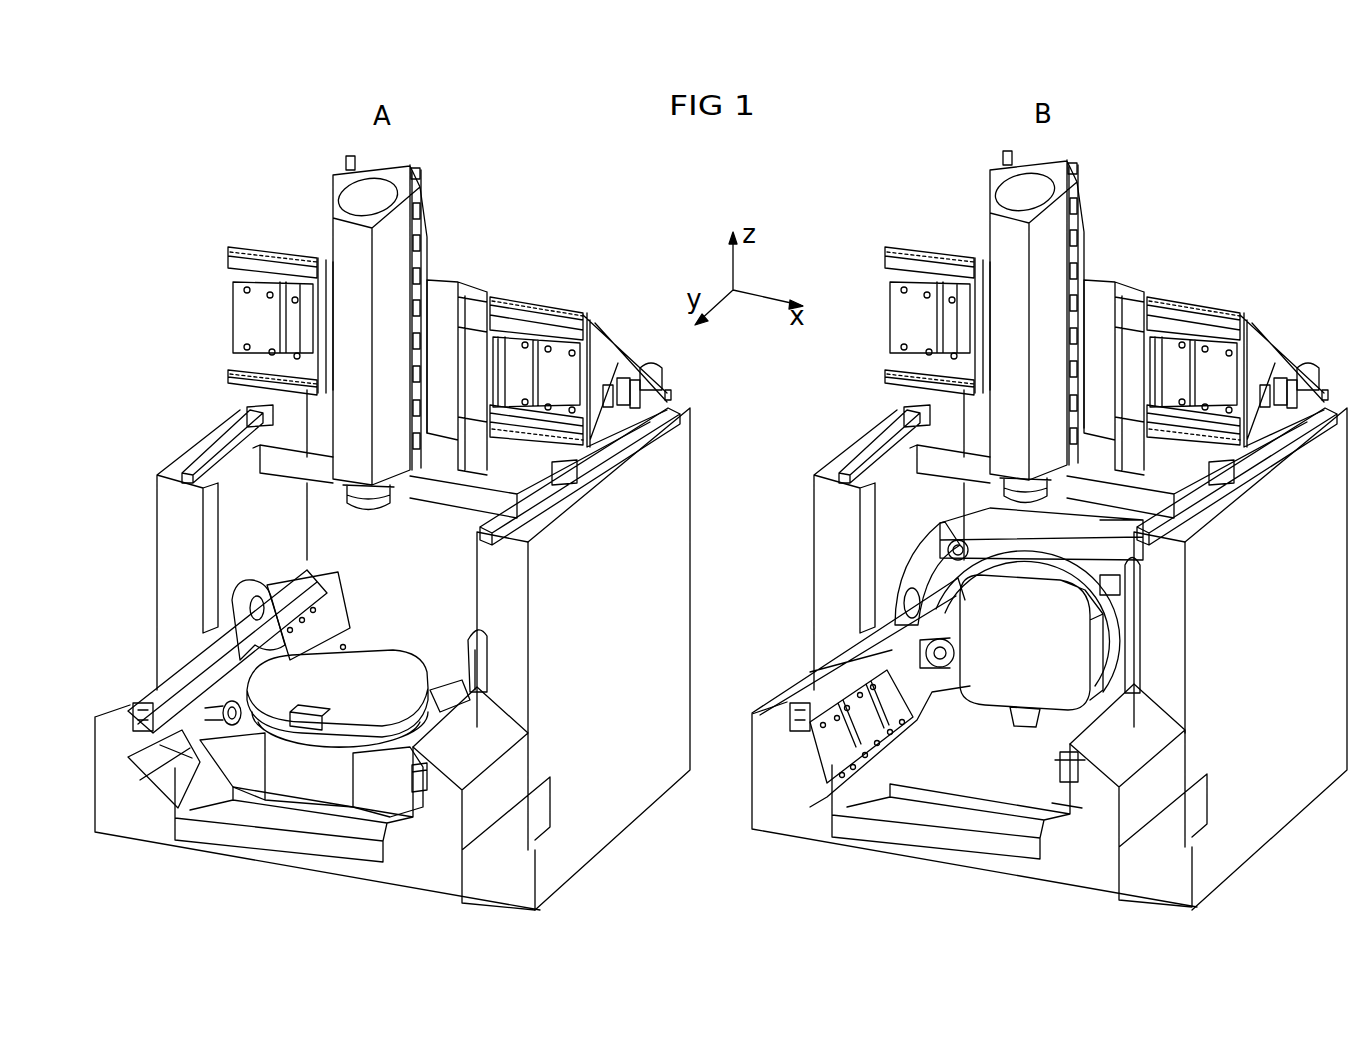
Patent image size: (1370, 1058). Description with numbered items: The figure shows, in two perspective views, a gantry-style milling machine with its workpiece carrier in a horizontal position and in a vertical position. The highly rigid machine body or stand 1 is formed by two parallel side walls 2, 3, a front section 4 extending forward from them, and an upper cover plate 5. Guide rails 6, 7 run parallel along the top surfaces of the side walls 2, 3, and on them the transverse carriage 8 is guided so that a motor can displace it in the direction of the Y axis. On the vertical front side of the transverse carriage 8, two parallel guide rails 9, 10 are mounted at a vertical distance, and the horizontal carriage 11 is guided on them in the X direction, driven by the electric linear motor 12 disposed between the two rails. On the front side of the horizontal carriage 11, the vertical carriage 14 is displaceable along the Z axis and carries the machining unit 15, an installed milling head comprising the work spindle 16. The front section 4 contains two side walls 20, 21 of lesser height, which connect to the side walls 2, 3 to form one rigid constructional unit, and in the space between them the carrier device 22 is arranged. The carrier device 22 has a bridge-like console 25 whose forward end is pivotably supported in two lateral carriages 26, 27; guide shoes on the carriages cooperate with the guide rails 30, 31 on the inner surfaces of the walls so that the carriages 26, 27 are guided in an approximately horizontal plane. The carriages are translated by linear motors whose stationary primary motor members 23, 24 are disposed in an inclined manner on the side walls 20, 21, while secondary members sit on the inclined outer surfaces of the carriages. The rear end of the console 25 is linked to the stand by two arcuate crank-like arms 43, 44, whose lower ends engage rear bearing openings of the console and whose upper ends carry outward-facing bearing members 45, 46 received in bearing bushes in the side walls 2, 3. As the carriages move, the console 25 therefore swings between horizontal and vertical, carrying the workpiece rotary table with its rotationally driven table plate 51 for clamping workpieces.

The machine body or stand 1 is at (147, 442).
The side wall 2 is at (163, 552).
The side wall 3 is at (618, 652).
The front section 4 is at (115, 657).
The upper cover plate 5 is at (520, 483).
The guide rail 6 is at (212, 452).
The guide rail 7 is at (503, 512).
The transverse carriage 8 is at (597, 353).
The guide rail 9 is at (250, 252).
The guide rail 10 is at (235, 378).
The horizontal carriage 11 is at (458, 283).
The electric linear motor 12 is at (558, 353).
The vertical carriage 14 is at (413, 248).
The machining unit 15 is at (398, 470).
The work spindle 16 is at (367, 507).
The side wall 20 is at (127, 822).
The side wall 21 is at (458, 817).
The carrier device 22 is at (282, 808).
The primary motor member 23 is at (823, 743).
The primary motor member 24 is at (1067, 810).
The console 25 is at (313, 793).
The carriage 26 is at (183, 753).
The carriage 27 is at (418, 792).
The guide rail 30 is at (142, 720).
The guide rail 31 is at (1068, 770).
The crank-like arm 43 is at (903, 573).
The crank-like arm 44 is at (472, 673).
The bearing member 45 is at (242, 592).
The bearing member 46 is at (473, 647).
The table plate 51 is at (316, 688).